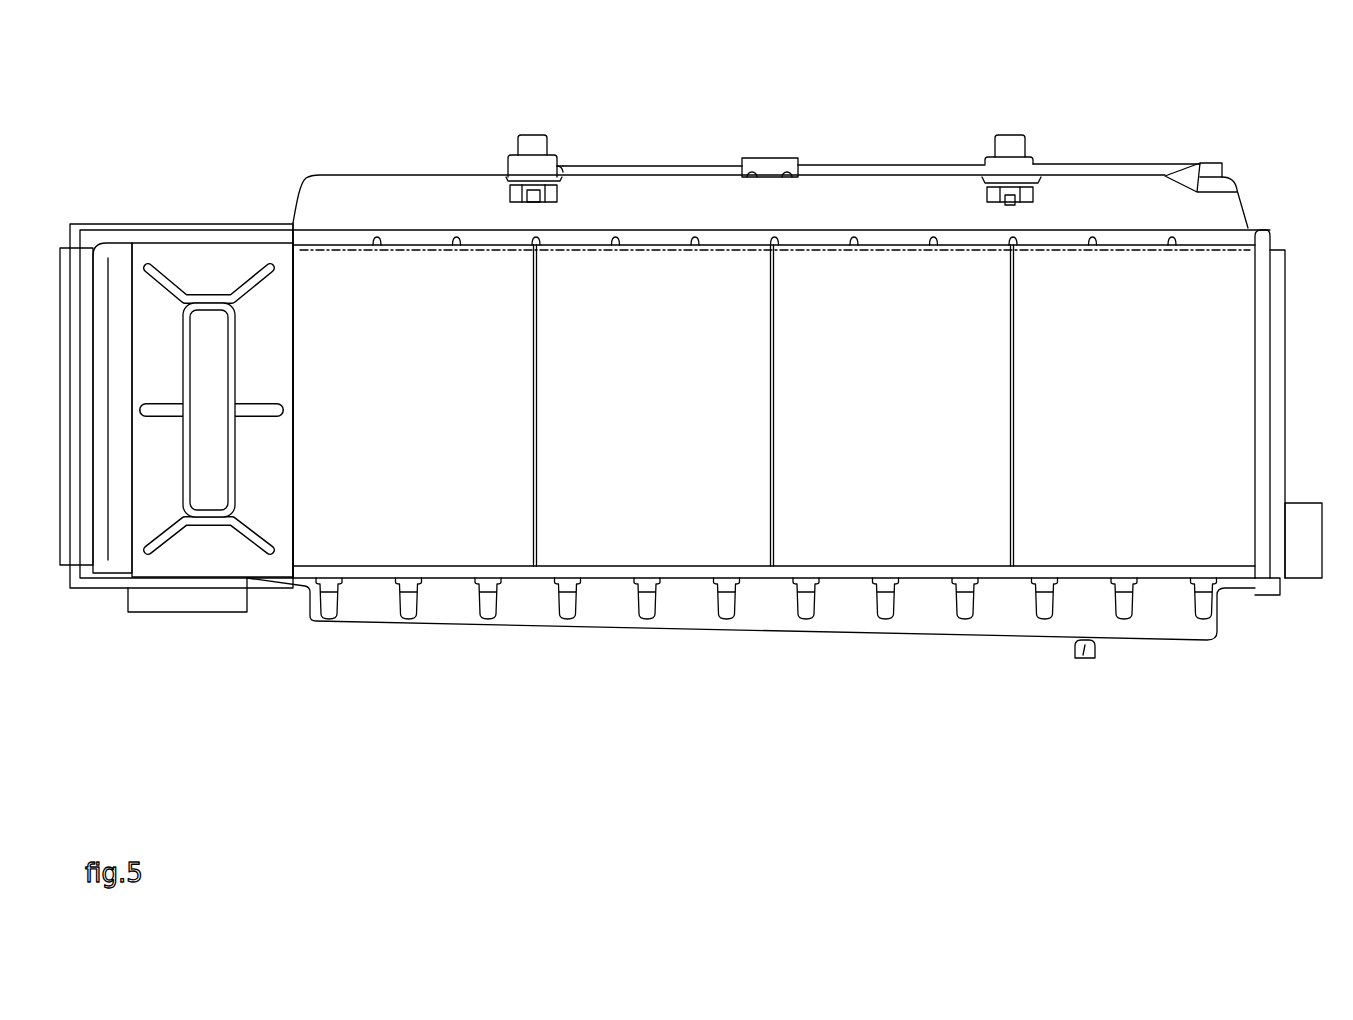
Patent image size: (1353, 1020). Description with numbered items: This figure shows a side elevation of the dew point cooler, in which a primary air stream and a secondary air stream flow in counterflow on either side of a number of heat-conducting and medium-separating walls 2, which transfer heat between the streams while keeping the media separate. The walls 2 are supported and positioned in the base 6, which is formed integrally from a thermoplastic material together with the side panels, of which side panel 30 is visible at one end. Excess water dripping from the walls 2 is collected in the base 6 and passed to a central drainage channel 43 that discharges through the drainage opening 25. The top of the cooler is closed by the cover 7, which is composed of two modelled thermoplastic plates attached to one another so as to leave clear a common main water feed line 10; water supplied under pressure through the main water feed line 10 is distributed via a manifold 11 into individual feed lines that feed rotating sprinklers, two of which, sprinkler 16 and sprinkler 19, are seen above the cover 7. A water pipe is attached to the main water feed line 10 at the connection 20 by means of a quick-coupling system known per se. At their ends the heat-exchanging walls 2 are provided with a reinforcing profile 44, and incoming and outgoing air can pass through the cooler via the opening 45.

The heat-conducting and medium-separating walls 2 is at (206, 258).
The cover 7 is at (398, 203).
The rotating sprinkler 16 is at (532, 147).
The manifold 11 is at (770, 165).
The main water feed line 10 is at (895, 172).
The rotating sprinkler 19 is at (1010, 150).
The connection 20 is at (1212, 168).
The reinforcing profile 44 is at (193, 522).
The opening 45 is at (222, 596).
The base 6 is at (697, 593).
The central drainage channel 43 is at (855, 628).
The drainage opening 25 is at (1083, 660).
The side panel 30 is at (1220, 528).